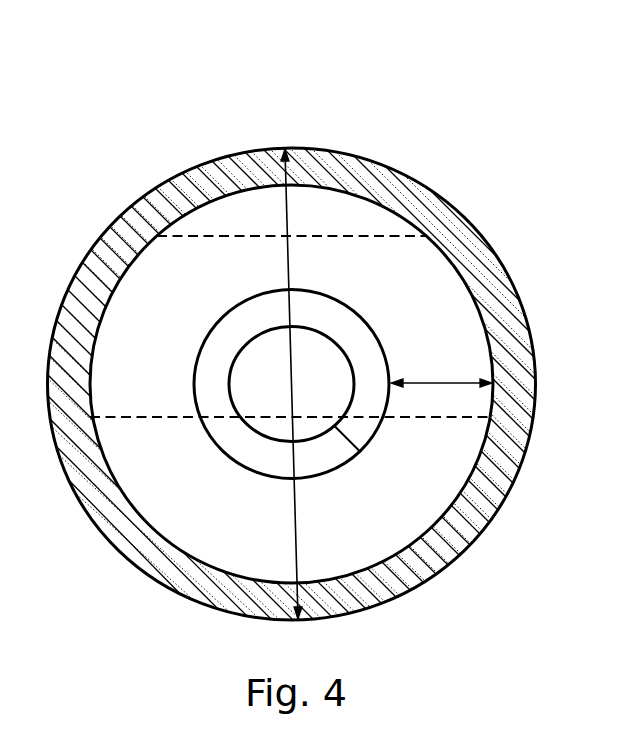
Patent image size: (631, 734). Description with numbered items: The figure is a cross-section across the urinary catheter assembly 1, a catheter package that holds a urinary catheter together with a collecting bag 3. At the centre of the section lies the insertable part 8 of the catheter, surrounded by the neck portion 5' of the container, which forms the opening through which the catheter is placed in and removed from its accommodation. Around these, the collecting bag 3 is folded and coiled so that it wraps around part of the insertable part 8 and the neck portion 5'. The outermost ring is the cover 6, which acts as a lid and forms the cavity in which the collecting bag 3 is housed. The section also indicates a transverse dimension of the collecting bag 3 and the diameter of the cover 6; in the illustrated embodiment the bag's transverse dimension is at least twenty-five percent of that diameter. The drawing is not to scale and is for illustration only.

The urinary catheter assembly 1 is at (148, 105).
The collecting bag 3 is at (383, 260).
The neck portion 5' is at (233, 446).
The cover 6 is at (507, 315).
The insertable part 8 is at (258, 380).